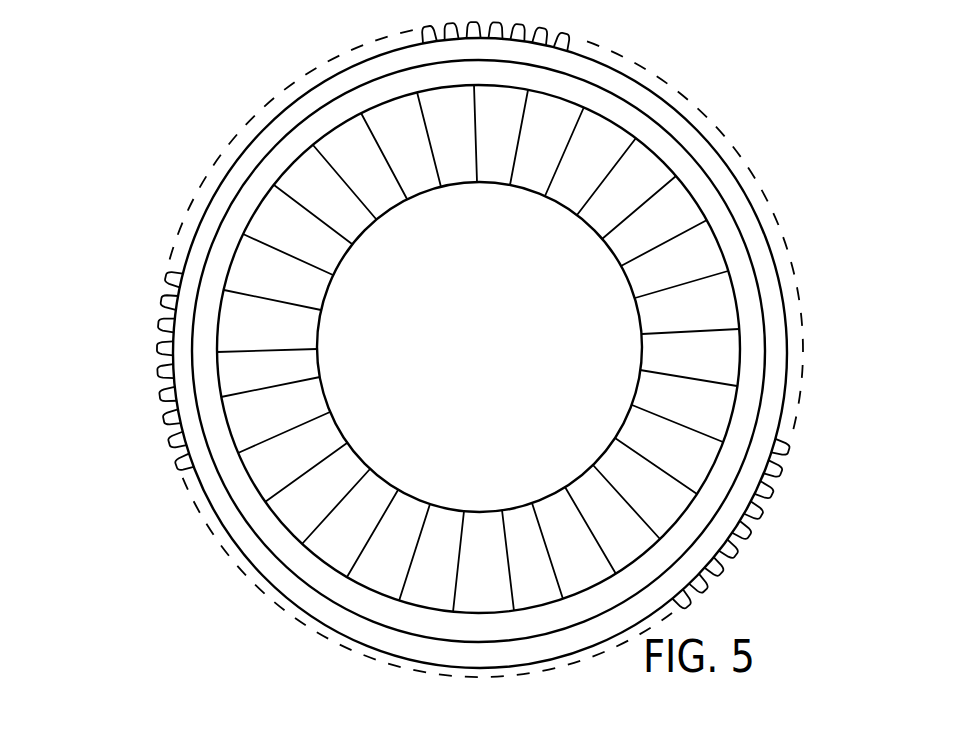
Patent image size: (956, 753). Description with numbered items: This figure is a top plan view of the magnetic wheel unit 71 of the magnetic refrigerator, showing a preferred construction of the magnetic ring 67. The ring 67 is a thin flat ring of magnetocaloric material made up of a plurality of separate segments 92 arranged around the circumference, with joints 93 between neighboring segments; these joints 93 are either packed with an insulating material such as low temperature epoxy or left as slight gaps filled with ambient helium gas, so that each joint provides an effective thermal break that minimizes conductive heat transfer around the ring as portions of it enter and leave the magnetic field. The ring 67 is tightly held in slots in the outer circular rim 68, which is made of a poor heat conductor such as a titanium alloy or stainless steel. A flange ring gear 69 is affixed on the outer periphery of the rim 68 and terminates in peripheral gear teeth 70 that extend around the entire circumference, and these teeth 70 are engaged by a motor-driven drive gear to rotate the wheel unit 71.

The magnetic ring 67 is at (687, 207).
The outer circular rim 68 is at (737, 252).
The flange ring gear 69 is at (777, 353).
The gear teeth 70 is at (477, 33).
The magnetic wheel unit 71 is at (684, 100).
The segments 92 is at (638, 255).
The joints 93 is at (478, 158).